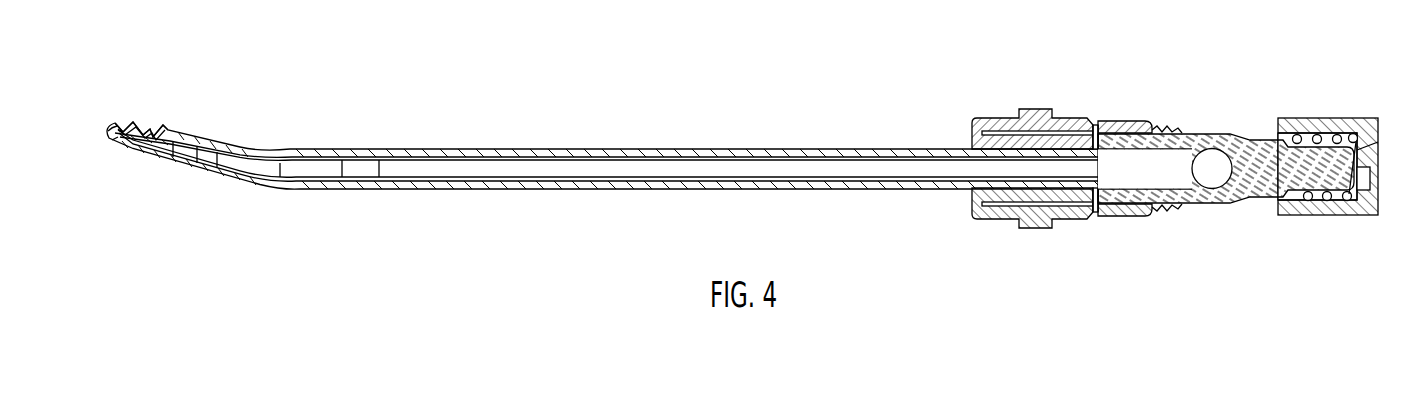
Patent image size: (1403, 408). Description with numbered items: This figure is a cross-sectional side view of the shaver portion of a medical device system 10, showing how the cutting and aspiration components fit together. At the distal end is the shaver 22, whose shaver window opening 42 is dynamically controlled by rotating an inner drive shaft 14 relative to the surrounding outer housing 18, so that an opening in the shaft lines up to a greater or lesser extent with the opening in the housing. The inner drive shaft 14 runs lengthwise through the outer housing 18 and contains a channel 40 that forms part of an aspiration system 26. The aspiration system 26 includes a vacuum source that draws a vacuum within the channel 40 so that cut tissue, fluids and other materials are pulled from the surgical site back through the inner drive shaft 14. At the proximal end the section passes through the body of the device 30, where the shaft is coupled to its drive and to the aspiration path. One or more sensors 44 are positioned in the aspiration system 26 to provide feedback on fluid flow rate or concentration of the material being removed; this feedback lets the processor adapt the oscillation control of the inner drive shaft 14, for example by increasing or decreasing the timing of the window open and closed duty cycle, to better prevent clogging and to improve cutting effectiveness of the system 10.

The medical device system 10 is at (722, 206).
The inner drive shaft 14 is at (373, 150).
The outer housing 18 is at (455, 150).
The shaver 22 is at (117, 101).
The aspiration system 26 is at (830, 170).
The device 30 is at (837, 101).
The channel 40 is at (467, 168).
The shaver window opening 42 is at (141, 103).
The sensor 44 is at (1179, 150).